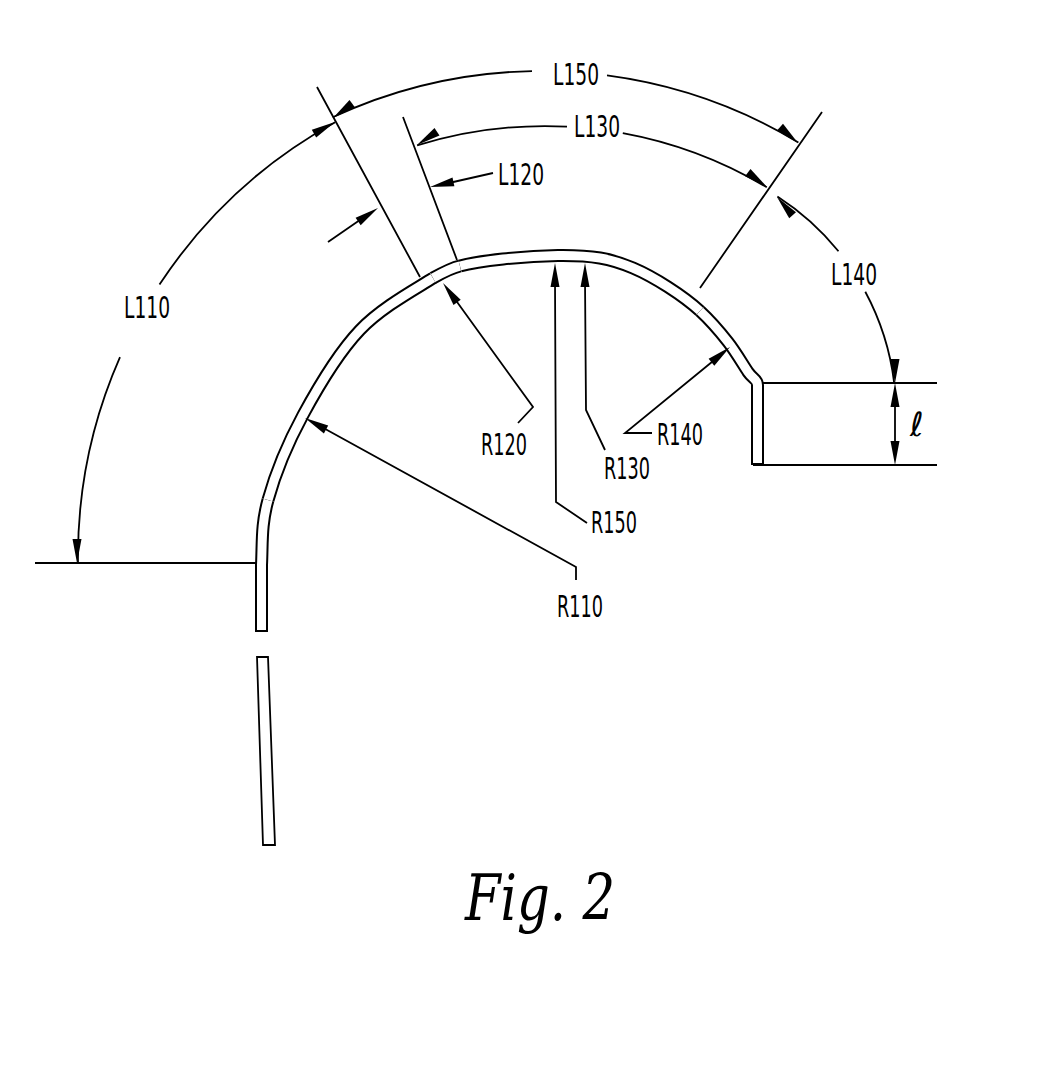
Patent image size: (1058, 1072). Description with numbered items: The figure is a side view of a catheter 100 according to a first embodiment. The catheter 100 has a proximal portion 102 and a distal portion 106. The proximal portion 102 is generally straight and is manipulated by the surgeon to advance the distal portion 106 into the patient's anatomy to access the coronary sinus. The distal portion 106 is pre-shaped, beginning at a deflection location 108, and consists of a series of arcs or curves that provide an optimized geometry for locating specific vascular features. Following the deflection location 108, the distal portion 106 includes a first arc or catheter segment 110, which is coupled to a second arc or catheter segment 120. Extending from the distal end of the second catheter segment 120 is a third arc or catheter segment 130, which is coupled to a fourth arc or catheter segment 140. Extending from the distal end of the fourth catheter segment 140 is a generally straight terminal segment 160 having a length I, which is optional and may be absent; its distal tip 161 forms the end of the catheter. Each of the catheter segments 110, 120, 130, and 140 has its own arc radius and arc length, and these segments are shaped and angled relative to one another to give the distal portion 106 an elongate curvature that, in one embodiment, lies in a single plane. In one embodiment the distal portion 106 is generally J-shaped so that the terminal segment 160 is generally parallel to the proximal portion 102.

The catheter 100 is at (140, 64).
The proximal portion 102 is at (270, 698).
The distal portion 106 is at (255, 612).
The deflection location 108 is at (256, 557).
The first arc or catheter segment 110 is at (295, 412).
The second arc or catheter segment 120 is at (437, 287).
The third arc or catheter segment 130 is at (582, 250).
The fourth arc or catheter segment 140 is at (743, 330).
The terminal segment 160 is at (765, 430).
The distal tip 161 is at (757, 467).